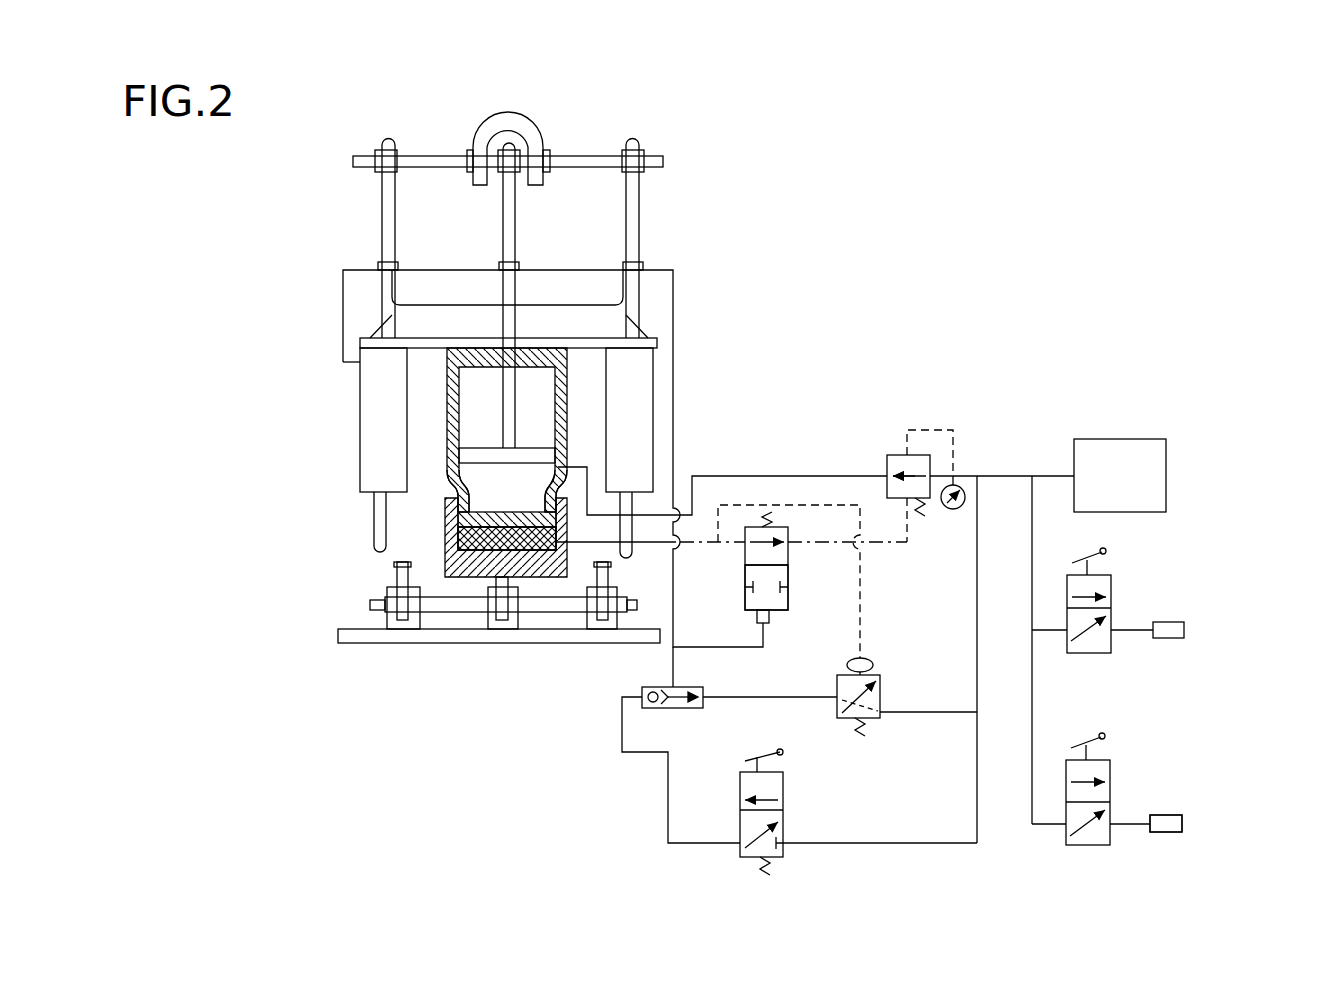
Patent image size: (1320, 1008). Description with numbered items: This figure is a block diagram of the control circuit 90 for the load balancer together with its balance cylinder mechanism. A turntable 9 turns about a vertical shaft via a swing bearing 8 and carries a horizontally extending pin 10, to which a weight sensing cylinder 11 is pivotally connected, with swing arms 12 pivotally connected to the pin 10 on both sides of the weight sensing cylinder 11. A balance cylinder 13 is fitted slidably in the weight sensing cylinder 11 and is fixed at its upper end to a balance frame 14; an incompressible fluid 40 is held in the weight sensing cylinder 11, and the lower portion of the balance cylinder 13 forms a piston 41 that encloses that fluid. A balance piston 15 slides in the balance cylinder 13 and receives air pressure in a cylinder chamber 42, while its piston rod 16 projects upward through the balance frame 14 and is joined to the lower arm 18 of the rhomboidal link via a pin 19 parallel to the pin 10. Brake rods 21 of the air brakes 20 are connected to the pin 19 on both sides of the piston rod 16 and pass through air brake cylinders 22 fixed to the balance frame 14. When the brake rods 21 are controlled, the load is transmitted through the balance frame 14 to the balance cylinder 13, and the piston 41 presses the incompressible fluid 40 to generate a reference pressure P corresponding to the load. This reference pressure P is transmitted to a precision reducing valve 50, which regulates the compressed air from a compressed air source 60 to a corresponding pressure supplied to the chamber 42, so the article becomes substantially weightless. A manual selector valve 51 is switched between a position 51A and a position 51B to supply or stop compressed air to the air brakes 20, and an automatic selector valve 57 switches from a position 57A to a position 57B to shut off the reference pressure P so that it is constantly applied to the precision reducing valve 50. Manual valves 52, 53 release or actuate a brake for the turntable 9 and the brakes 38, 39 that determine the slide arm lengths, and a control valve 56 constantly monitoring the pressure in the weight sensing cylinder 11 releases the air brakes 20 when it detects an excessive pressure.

The swing bearing 8 is at (1184, 630).
The turntable 9 is at (405, 643).
The pin 10 is at (372, 605).
The weight sensing cylinder 11 is at (470, 578).
The swing arms 12 is at (395, 580).
The balance cylinder 13 is at (449, 398).
The balance frame 14 is at (458, 313).
The balance piston 15 is at (505, 460).
The piston rod 16 is at (508, 405).
The lower arm 18 is at (542, 136).
The pin 19 is at (663, 160).
The air brakes 20 is at (499, 388).
The brake rods 21 is at (382, 222).
The air brake cylinders 22 is at (365, 462).
The brake 38 is at (1182, 823).
The brake 39 is at (1166, 823).
The incompressible fluid 40 is at (458, 540).
The piston 41 is at (452, 514).
The cylinder chamber 42 is at (450, 488).
The precision reducing valve 50 is at (893, 452).
The manual selector valve 51 is at (777, 802).
The position 51A is at (740, 782).
The position 51B is at (740, 833).
The manual valve 52 is at (1160, 595).
The manual valve 53 is at (1142, 775).
The control valve 56 is at (880, 680).
The automatic selector valve 57 is at (733, 581).
The position 57A is at (745, 556).
The position 57B is at (745, 604).
The compressed air source 60 is at (1140, 439).
The control circuit 90 is at (997, 328).
The reference pressure P is at (527, 552).